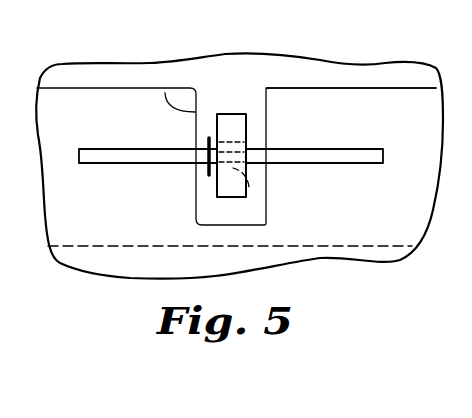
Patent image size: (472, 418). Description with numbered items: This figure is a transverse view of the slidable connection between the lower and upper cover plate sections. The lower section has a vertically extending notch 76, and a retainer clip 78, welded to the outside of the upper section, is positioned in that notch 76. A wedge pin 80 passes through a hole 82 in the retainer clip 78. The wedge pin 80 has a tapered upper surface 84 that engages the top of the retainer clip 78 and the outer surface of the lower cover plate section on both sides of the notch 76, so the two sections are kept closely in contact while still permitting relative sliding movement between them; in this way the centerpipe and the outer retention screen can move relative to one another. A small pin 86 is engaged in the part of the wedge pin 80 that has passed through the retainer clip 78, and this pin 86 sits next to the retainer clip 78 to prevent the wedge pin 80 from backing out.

The notch 76 is at (165, 93).
The retainer clip 78 is at (228, 114).
The wedge pin 80 is at (324, 147).
The hole 82 is at (249, 187).
The tapered upper surface 84 is at (143, 166).
The small pin 86 is at (207, 172).